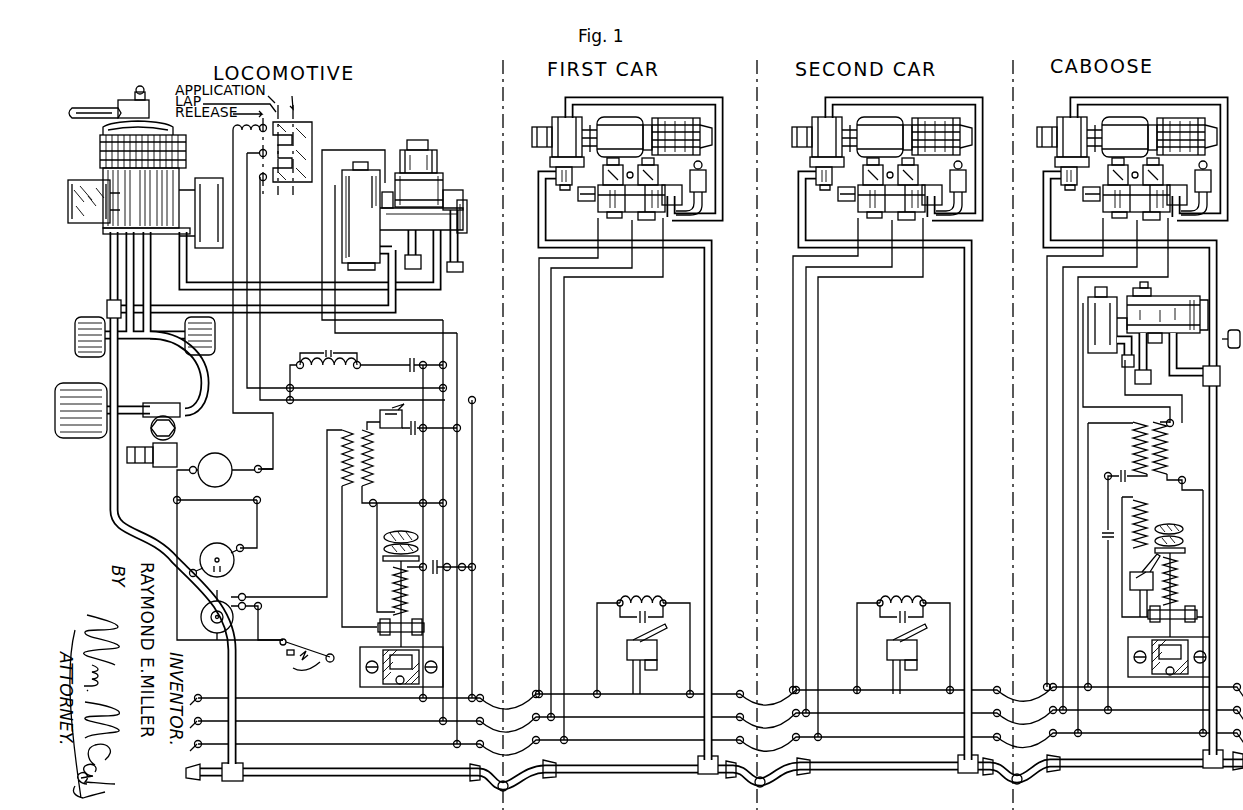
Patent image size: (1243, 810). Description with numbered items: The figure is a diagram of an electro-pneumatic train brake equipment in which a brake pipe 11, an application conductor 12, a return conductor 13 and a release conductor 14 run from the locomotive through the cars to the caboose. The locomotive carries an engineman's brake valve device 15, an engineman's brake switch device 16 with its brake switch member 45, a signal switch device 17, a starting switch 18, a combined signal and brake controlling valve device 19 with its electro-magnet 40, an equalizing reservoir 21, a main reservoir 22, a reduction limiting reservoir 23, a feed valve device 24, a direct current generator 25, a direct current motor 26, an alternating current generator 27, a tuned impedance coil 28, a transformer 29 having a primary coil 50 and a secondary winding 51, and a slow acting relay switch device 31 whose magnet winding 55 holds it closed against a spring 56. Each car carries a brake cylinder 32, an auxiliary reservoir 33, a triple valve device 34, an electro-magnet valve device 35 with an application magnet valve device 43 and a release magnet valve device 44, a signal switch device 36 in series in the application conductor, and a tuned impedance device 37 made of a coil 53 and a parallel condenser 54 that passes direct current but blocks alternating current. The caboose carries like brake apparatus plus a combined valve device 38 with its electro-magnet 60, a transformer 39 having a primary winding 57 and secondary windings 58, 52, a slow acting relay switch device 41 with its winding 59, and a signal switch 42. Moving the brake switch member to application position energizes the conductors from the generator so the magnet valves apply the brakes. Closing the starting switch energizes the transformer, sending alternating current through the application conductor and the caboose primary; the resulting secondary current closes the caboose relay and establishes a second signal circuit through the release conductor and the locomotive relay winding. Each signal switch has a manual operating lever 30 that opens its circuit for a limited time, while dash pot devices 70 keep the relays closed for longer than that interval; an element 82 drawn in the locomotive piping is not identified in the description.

The brake pipe 11 is at (350, 774).
The application conductor 12 is at (266, 697).
The return conductor 13 is at (672, 717).
The release conductor 14 is at (672, 741).
The engineman's brake valve device 15 is at (95, 262).
The engineman's brake switch device 16 is at (300, 221).
The signal switch device 17 is at (378, 427).
The starting switch 18 is at (312, 637).
The combined electro-magnetic signal and brake controlling valve device 19 is at (480, 166).
The equalizing reservoir 21 is at (95, 358).
The main reservoir 22 is at (90, 438).
The reduction limiting reservoir 23 is at (200, 355).
The feed valve device 24 is at (165, 468).
The direct current generator 25 is at (228, 458).
The direct current motor 26 is at (221, 546).
The alternating current generator 27 is at (203, 610).
The tuned impedance coil 28 is at (357, 365).
The transformer 29 is at (365, 503).
The manual operating lever 30 is at (658, 628).
The slow acting relay switch device 31 is at (440, 619).
The brake cylinder 32 is at (676, 118).
The auxiliary reservoir 33 is at (622, 117).
The triple valve device 34 is at (565, 132).
The electro-magnet valve device 35 is at (625, 212).
The signal switch device 36 is at (656, 660).
The tuned impedance device 37 is at (664, 602).
The combined signal and brake controlling valve device 38 is at (1198, 283).
The transformer 39 is at (1172, 499).
The electro-magnet 40 is at (360, 192).
The slow acting relay switch device 41 is at (1206, 603).
The signal switch 42 is at (1130, 580).
The application magnet valve device 43 is at (600, 175).
The release electro-magnet valve device 44 is at (650, 177).
The brake switch member 45 is at (312, 124).
The primary coil 50 is at (340, 470).
The secondary winding 51 is at (378, 462).
The secondary winding 52 is at (1148, 525).
The coil 53 is at (634, 602).
The condenser 54 is at (404, 404).
The magnet winding 55 is at (406, 598).
The spring 56 is at (412, 538).
The primary winding 57 is at (1132, 446).
The secondary winding 58 is at (1165, 455).
The winding 59 is at (1178, 588).
The electro-magnet 60 is at (1104, 312).
The dash pot devices 70 is at (398, 648).
The pipe 82 is at (112, 520).